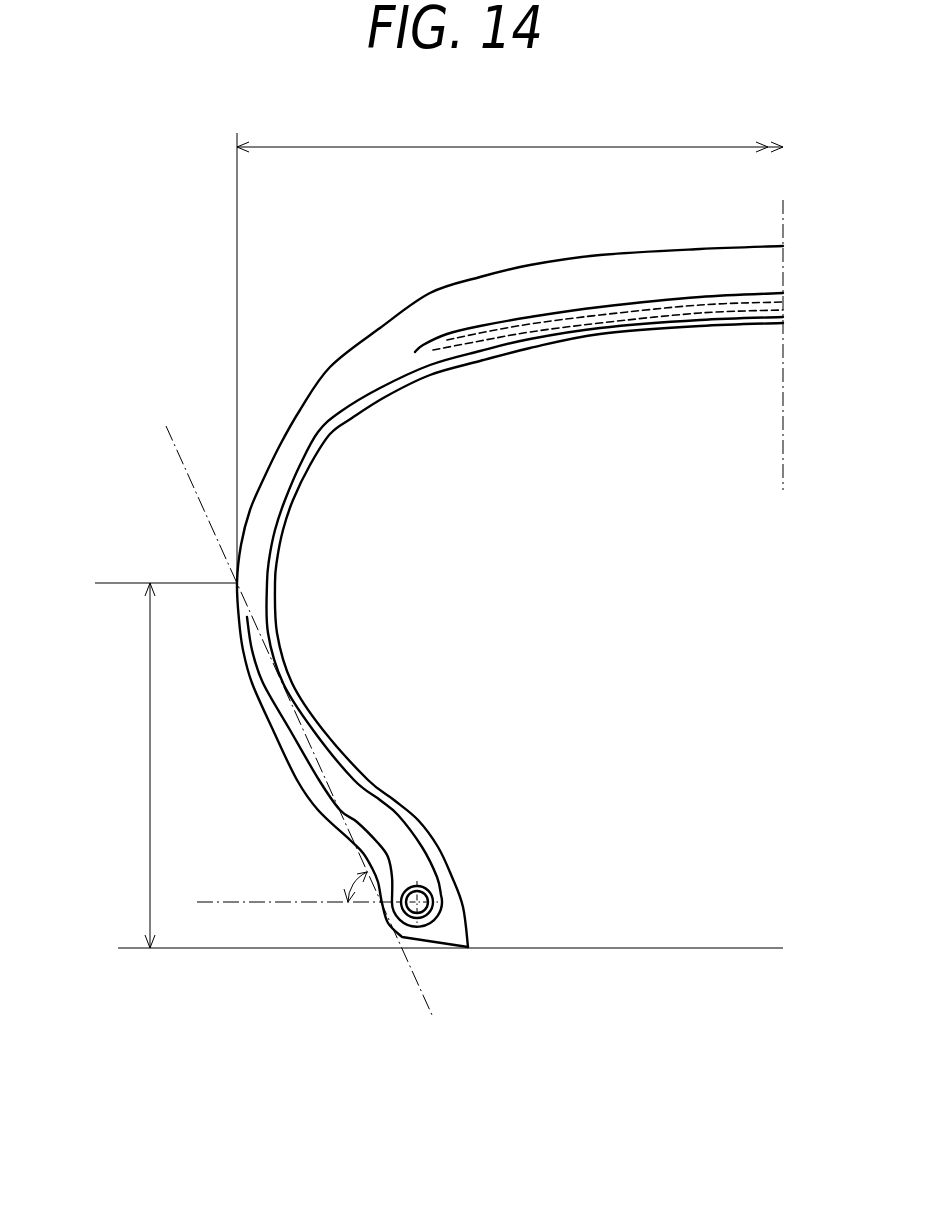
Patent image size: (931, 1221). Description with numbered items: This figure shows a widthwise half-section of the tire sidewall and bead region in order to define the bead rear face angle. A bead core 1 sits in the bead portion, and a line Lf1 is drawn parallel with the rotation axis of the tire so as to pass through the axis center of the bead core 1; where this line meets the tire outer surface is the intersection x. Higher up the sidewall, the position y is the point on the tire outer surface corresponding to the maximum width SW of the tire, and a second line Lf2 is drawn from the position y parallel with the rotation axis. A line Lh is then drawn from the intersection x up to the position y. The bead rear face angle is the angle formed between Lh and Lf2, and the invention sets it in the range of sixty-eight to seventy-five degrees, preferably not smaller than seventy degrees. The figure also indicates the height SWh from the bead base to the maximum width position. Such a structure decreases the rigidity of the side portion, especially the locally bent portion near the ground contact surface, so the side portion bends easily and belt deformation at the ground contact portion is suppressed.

The bead core 1 is at (428, 893).
The maximum width of the tire SW is at (510, 133).
The section width height SWh is at (128, 765).
The line from intersection x to position y Lh is at (182, 462).
The line parallel with the rotation axis through the bead core axis center Lf1 is at (238, 902).
The line parallel with the rotation axis through position y Lf2 is at (113, 583).
The intersection of line Lf1 with the tire outer surface x is at (381, 902).
The position at the tire outer surface corresponding to the maximum width y is at (237, 583).